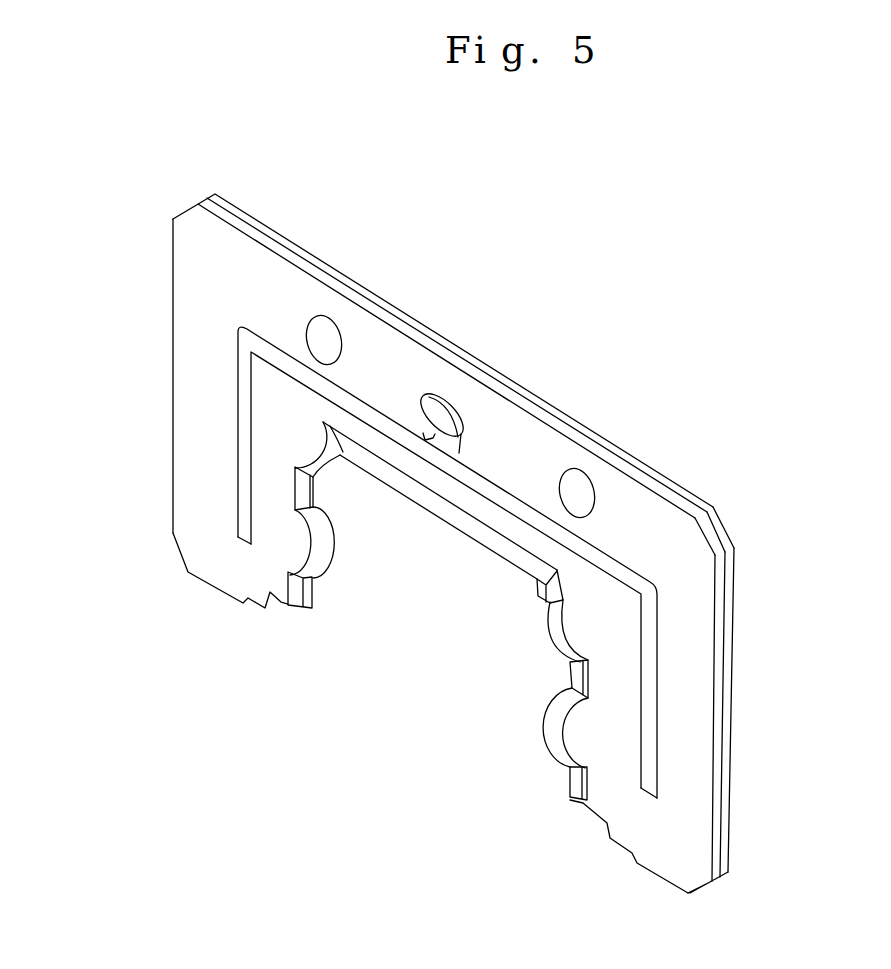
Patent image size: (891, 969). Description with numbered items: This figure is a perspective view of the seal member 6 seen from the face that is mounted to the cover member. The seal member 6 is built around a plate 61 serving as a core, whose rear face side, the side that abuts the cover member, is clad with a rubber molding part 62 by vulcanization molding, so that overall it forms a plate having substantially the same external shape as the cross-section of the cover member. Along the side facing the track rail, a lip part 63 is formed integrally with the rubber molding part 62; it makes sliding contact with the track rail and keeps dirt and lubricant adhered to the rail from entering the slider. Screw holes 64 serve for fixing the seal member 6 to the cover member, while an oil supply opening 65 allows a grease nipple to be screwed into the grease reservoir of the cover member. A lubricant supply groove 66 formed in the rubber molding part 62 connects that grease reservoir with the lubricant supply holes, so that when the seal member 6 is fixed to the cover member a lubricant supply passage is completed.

The seal member 6 is at (516, 340).
The plate 61 is at (722, 530).
The rubber molding part 62 is at (193, 485).
The lip part 63 is at (522, 559).
The screw holes 64 is at (318, 328).
The oil supply opening 65 is at (422, 432).
The lubricant supply groove 66 is at (237, 380).